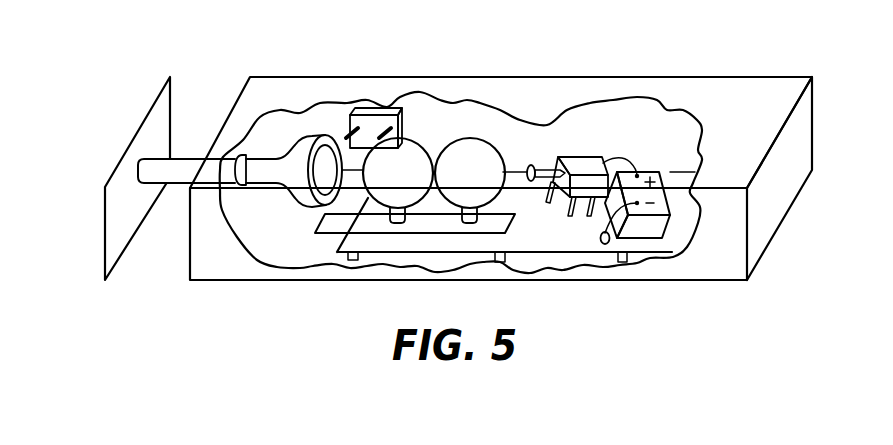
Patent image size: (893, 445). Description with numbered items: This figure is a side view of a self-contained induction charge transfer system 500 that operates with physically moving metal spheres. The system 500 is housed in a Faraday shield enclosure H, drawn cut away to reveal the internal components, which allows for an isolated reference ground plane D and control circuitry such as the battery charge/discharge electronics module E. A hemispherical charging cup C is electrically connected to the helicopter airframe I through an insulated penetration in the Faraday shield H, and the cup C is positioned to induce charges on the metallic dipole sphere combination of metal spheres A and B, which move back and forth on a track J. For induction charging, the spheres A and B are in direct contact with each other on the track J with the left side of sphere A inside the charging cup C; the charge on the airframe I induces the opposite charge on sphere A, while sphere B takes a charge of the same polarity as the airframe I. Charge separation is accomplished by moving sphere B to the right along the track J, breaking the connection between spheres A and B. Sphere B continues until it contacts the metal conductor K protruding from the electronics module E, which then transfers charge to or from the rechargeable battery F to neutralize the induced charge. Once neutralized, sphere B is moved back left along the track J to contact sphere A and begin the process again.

The induction charge transfer system 500 is at (133, 47).
The metal sphere A is at (398, 180).
The metal sphere B is at (470, 180).
The hemispherical charging cup C is at (299, 171).
The reference ground plane D is at (504, 230).
The battery charge/discharge electronics module E is at (477, 162).
The rechargeable battery F is at (648, 201).
The Faraday shield enclosure H is at (501, 178).
The helicopter airframe I is at (170, 178).
The track J is at (415, 223).
The metal conductor K is at (534, 186).